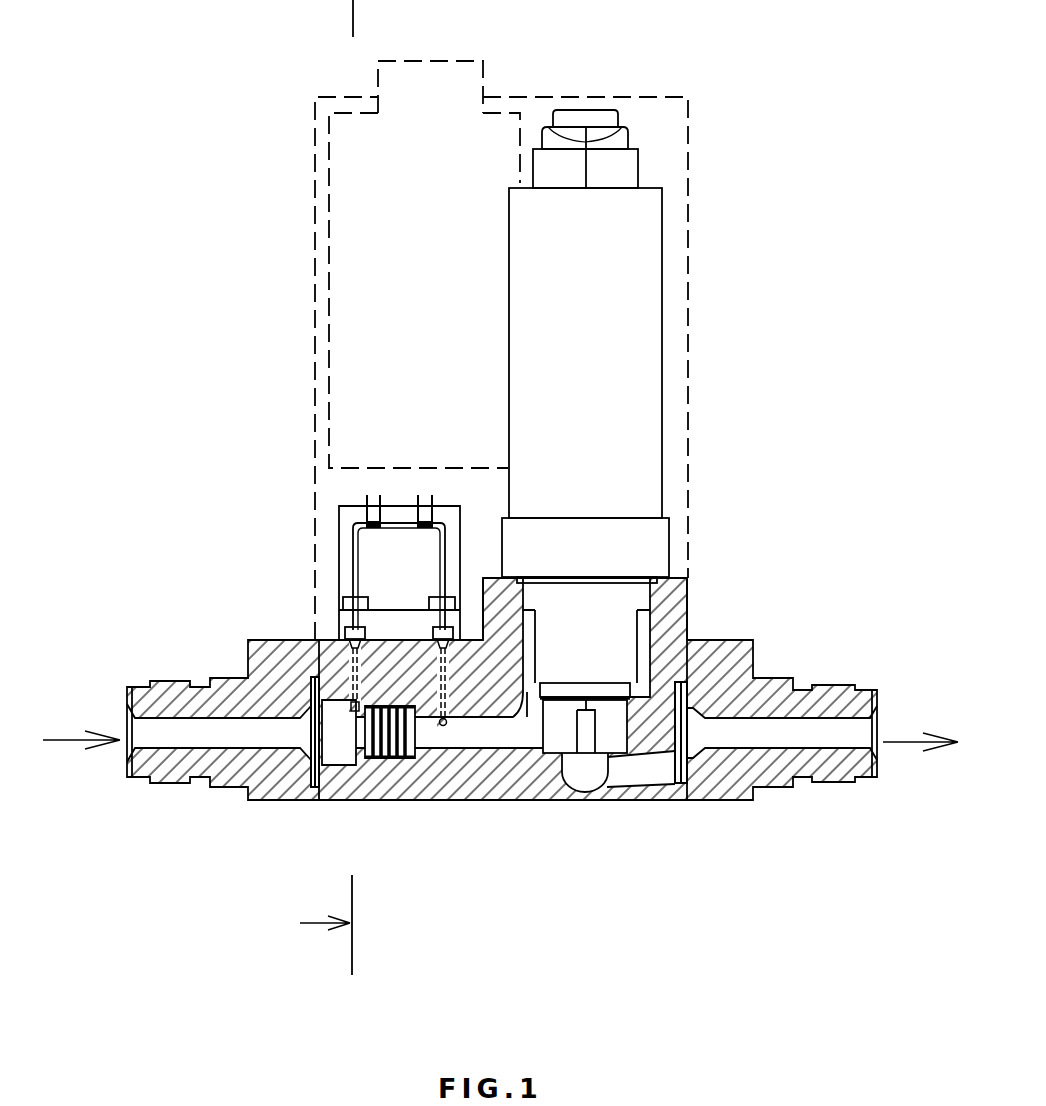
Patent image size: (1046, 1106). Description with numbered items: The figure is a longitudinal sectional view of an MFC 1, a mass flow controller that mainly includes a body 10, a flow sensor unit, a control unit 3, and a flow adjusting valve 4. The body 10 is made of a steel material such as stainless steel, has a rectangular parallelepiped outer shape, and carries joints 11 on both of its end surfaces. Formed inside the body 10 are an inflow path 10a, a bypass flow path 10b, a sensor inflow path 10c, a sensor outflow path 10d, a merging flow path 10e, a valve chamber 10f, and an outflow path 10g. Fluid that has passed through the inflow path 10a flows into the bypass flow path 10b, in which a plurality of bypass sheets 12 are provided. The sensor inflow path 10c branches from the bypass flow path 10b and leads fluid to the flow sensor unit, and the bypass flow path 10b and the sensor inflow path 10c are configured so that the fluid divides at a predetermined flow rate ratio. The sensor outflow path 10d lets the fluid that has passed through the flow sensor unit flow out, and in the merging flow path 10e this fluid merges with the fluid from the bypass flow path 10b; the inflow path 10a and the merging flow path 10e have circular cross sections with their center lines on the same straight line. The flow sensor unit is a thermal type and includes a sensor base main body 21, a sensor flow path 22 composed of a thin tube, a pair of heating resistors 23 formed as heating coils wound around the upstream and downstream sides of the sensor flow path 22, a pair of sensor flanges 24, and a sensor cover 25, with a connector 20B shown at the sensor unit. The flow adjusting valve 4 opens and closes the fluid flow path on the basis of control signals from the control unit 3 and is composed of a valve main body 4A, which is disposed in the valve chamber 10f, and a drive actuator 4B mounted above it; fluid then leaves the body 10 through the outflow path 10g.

The MFC 1 is at (804, 135).
The control unit 3 is at (340, 198).
The flow adjusting valve 4 is at (666, 338).
The valve main body 4A is at (667, 662).
The drive actuator 4B is at (645, 445).
The body 10 is at (570, 788).
The inflow path 10a is at (340, 763).
The bypass flow path 10b is at (367, 767).
The sensor inflow path 10c is at (345, 700).
The sensor outflow path 10d is at (487, 735).
The merging flow path 10e is at (525, 712).
The valve chamber 10f is at (647, 632).
The outflow path 10g is at (633, 787).
The joint 11 is at (193, 735).
The bypass sheet 12 is at (392, 760).
The connector 20B is at (336, 542).
The sensor base main body 21 is at (353, 660).
The sensor flow path 22 is at (353, 570).
The heating resistor 23 is at (419, 495).
The sensor flange 24 is at (433, 632).
The sensor cover 25 is at (340, 513).